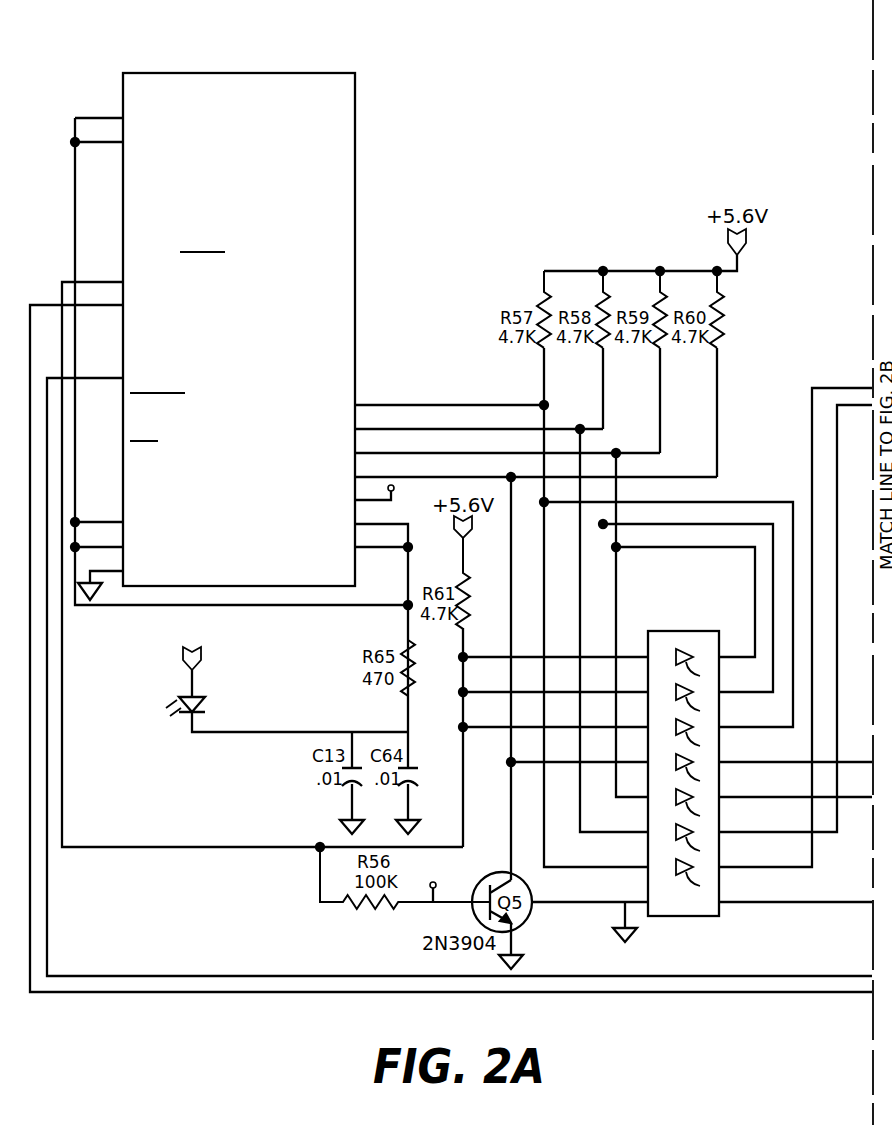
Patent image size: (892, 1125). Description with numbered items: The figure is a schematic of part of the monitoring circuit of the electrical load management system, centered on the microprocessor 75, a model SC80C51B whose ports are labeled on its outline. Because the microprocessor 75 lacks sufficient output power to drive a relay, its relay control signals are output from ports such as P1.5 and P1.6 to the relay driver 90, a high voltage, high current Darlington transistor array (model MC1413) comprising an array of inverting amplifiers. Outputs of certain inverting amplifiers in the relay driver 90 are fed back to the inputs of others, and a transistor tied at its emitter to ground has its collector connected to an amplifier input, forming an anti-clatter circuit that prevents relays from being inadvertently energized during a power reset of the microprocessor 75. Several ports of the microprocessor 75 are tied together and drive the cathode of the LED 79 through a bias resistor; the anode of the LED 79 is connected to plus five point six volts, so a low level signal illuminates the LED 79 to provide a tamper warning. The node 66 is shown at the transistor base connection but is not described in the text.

The microprocessor 75 is at (150, 73).
The LED 79 is at (206, 705).
The transistor base node connection 66 is at (434, 880).
The relay driver 90 is at (722, 916).